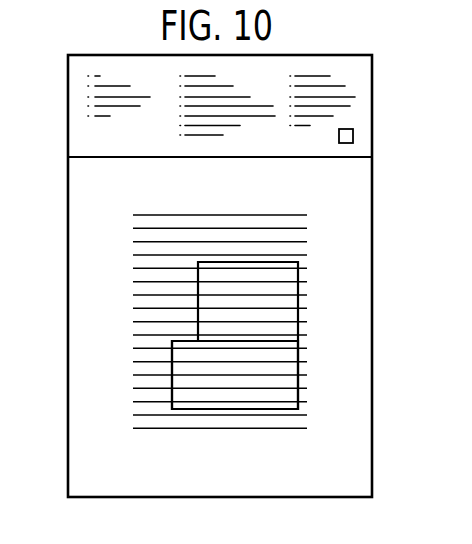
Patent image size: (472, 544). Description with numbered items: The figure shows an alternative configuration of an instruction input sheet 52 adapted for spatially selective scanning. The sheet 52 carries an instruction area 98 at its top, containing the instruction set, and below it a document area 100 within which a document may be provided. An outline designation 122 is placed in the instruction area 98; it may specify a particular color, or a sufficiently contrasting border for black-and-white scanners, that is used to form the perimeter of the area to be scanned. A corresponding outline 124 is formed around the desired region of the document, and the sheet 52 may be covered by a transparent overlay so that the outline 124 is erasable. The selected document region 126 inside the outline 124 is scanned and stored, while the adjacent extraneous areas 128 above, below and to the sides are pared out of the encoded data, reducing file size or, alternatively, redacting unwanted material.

The document area 100 is at (92, 455).
The instruction input sheet 52 is at (88, 141).
The instruction area 98 is at (88, 100).
The outline designation 122 is at (353, 134).
The adjacent extraneous areas 128 is at (303, 248).
The selected document region 126 is at (285, 315).
The outline 124 is at (298, 369).